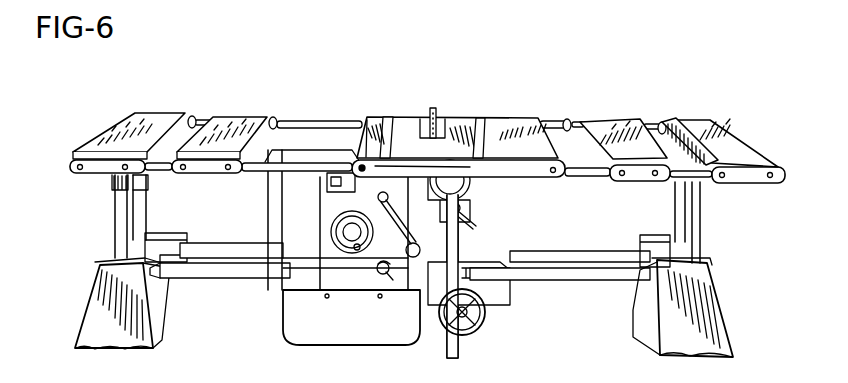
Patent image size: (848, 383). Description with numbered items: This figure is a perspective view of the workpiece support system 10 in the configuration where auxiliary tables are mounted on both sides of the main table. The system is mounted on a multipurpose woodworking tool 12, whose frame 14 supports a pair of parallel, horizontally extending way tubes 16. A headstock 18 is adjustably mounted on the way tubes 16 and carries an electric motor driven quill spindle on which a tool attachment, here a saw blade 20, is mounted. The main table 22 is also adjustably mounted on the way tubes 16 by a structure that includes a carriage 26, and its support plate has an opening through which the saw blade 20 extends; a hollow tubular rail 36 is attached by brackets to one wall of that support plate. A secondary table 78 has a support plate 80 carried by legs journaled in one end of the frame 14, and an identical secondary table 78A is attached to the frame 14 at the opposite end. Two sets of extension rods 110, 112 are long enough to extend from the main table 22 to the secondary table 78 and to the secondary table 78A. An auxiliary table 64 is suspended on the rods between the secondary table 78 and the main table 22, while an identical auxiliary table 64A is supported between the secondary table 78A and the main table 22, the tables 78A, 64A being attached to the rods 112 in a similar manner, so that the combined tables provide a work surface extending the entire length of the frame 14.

The workpiece support system 10 is at (572, 50).
The multipurpose woodworking tool 12 is at (736, 291).
The frame 14 is at (95, 313).
The way tubes 16 is at (570, 265).
The headstock 18 is at (358, 333).
The saw blade 20 is at (437, 122).
The main table 22 is at (503, 118).
The carriage 26 is at (408, 122).
The rail 36 is at (514, 172).
The auxiliary table 64 is at (617, 120).
The auxiliary table 64A is at (228, 118).
The secondary table 78 is at (697, 125).
The secondary table 78A is at (128, 118).
The support plate 80 is at (730, 145).
The extension rods 110 is at (565, 124).
The extension rods 112 is at (297, 122).